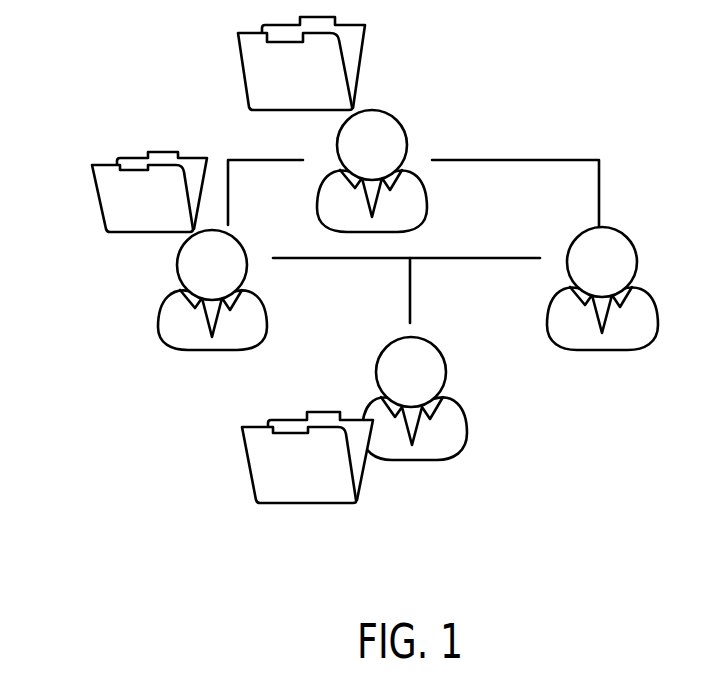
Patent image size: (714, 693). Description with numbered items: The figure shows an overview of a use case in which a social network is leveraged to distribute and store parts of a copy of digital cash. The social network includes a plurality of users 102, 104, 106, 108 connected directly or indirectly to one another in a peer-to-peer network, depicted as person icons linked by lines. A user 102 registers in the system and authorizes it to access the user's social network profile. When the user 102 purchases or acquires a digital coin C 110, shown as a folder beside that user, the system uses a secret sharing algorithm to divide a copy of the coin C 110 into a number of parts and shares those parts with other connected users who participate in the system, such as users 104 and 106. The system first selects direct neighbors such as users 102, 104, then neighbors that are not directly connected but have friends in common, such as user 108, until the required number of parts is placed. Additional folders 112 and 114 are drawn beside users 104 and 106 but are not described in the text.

The node (user/peer) 102 is at (208, 352).
The node (user/peer) 104 is at (389, 111).
The node (user/peer) 106 is at (432, 460).
The node (user/peer) 108 is at (588, 350).
The data folder Ci 110 is at (96, 200).
The data folder N1 112 is at (242, 78).
The data folder Ni 114 is at (248, 468).